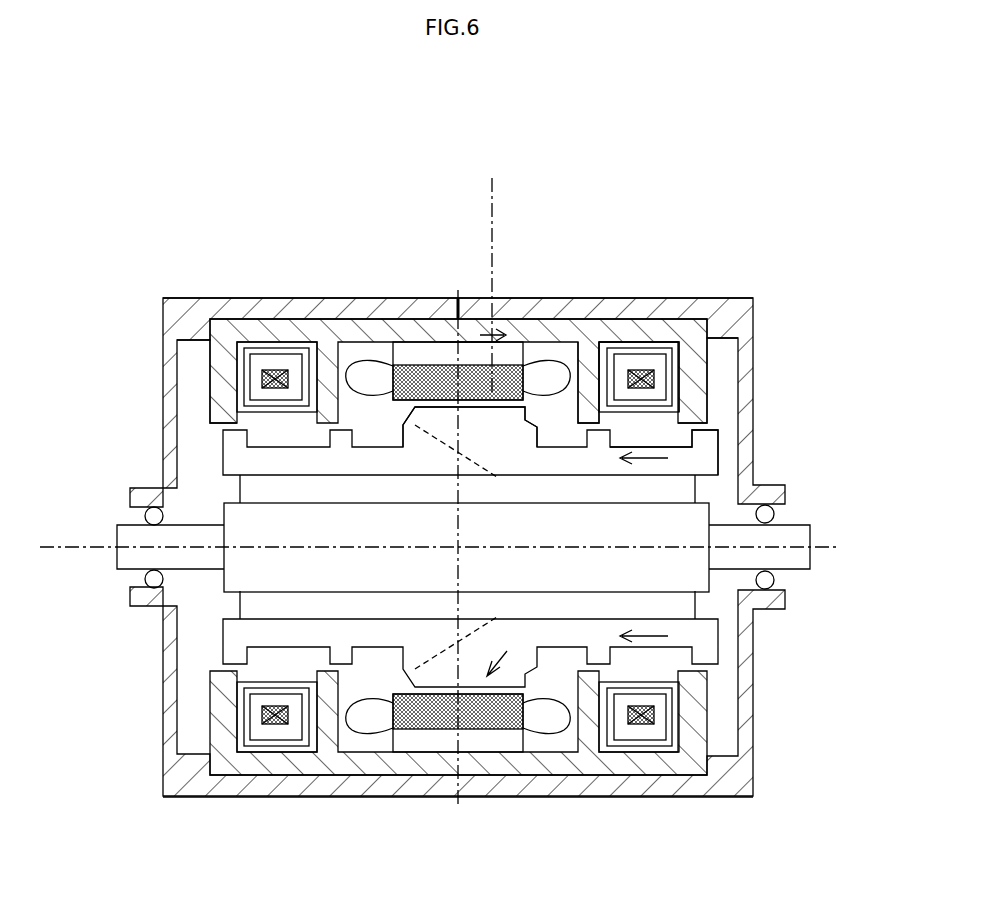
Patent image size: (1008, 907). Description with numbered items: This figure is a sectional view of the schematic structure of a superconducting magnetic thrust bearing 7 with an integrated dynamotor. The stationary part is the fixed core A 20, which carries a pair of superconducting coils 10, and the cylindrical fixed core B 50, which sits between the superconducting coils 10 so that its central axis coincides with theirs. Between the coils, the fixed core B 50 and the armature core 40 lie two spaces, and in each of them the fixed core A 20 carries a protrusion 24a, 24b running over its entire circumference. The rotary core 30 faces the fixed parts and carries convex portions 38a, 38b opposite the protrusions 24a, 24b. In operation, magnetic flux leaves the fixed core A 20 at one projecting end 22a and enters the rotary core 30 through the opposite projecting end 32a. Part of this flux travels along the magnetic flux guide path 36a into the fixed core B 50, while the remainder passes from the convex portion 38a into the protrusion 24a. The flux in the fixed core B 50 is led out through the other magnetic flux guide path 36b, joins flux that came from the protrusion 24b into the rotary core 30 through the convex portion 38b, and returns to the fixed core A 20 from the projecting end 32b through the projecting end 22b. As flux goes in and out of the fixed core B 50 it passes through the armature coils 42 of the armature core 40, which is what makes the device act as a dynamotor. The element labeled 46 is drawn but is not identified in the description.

The superconducting magnetic thrust bearing with integrated dynamotor 7 is at (300, 192).
The superconducting coil 10 is at (275, 370).
The fixed core A 20 is at (688, 319).
The projecting end 22a is at (713, 440).
The projecting end 22b is at (213, 423).
The protrusion 24a is at (566, 365).
The protrusion 24b is at (352, 364).
The rotary core 30 is at (732, 475).
The projecting end 32a is at (718, 460).
The projecting end 32b is at (233, 440).
The magnetic flux guide path 36a is at (492, 433).
The magnetic flux guide path 36b is at (525, 425).
The convex portion 38a is at (628, 342).
The convex portion 38b is at (415, 365).
The armature core 40 is at (510, 350).
The armature coil 42 is at (527, 350).
The pole piece 46 is at (468, 352).
The fixed core B 50 is at (428, 350).